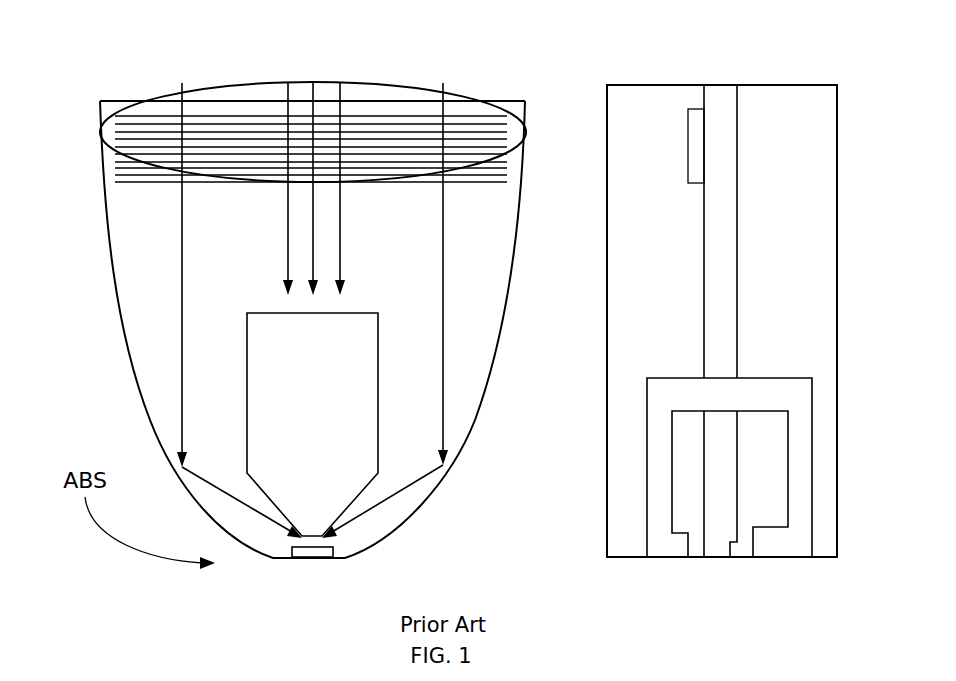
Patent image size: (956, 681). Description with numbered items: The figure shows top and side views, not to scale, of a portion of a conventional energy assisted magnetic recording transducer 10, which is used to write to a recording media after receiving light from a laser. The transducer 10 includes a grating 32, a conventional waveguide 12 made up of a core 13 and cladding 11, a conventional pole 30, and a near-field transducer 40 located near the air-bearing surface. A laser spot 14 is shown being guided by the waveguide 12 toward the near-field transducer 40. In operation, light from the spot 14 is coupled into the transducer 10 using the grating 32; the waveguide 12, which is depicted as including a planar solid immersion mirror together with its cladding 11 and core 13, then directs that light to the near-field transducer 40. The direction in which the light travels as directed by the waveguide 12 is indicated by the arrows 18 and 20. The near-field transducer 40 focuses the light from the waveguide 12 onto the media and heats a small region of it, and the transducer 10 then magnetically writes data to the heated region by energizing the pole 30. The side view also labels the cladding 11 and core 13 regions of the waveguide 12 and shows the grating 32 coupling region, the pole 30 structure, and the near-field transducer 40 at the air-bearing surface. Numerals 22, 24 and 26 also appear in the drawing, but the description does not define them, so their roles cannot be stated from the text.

The energy assisted magnetic recording transducer 10 is at (70, 49).
The cladding 11 is at (688, 85).
The waveguide 12 is at (505, 298).
The core 13 is at (737, 133).
The laser spot 14 is at (408, 90).
The arrow 18 is at (443, 402).
The arrow 20 is at (182, 372).
The light coupling region 22 is at (339, 233).
The waveguide outline 24 is at (285, 228).
The incident light 26 is at (314, 115).
The pole 30 is at (247, 370).
The grating 32 is at (142, 198).
The near-field transducer 40 is at (313, 557).